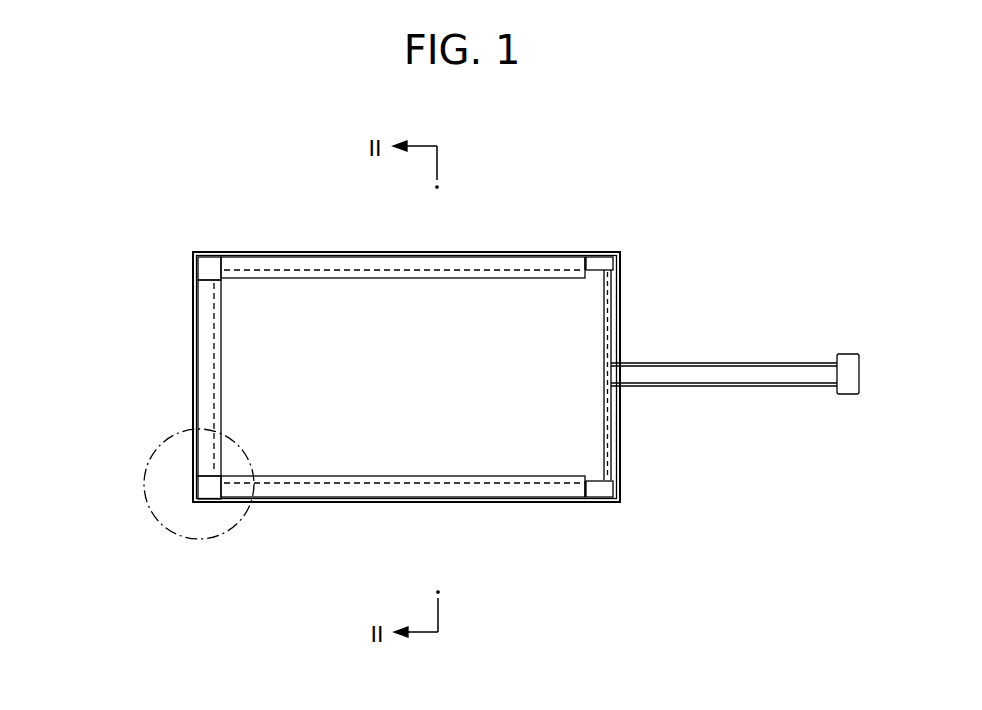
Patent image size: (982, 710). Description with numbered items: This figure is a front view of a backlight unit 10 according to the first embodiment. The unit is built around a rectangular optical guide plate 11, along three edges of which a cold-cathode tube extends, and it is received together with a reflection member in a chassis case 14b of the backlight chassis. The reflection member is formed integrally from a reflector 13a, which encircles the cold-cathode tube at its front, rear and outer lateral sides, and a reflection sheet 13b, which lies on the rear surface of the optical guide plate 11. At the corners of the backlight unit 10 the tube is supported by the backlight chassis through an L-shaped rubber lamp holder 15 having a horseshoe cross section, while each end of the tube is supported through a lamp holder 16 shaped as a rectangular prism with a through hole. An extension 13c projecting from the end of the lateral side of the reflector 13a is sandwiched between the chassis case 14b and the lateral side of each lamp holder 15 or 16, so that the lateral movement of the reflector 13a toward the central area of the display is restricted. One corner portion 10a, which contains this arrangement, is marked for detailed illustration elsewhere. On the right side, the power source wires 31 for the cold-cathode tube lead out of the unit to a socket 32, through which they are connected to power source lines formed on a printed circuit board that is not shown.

The backlight unit 10 is at (83, 197).
The corner portion 10a is at (150, 505).
The optical guide plate 11 is at (570, 330).
The reflector 13a is at (208, 358).
The reflection sheet 13b is at (303, 257).
The extension 13c is at (590, 253).
The chassis case 14b is at (280, 503).
The lamp holder 15 is at (208, 252).
The lamp holder 16 is at (603, 253).
The power source wires 31 is at (738, 387).
The socket 32 is at (845, 353).